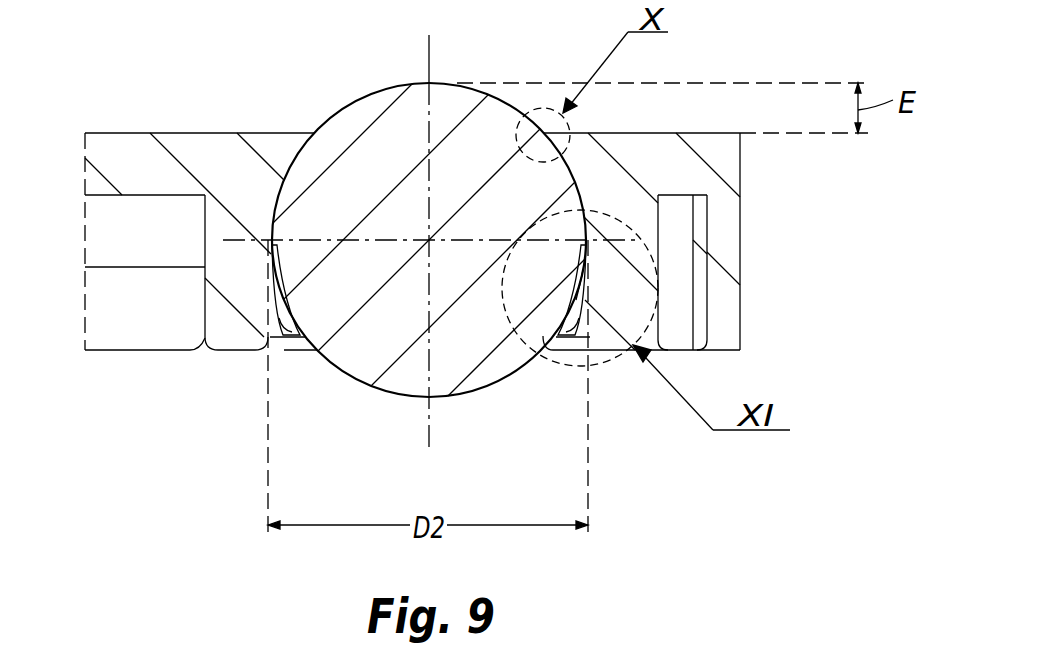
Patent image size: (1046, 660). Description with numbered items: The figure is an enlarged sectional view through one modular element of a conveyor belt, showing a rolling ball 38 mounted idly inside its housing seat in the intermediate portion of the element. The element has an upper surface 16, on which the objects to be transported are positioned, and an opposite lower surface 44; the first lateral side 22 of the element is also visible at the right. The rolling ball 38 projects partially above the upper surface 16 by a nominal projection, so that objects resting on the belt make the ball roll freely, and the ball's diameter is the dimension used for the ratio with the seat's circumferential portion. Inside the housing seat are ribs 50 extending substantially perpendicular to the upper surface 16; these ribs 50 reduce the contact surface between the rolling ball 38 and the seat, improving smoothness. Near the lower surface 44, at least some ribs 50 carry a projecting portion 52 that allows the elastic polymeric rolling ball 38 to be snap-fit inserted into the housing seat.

The upper surface 16 is at (183, 133).
The first lateral side 22 is at (740, 223).
The rolling ball 38 is at (371, 150).
The lower surface 44 is at (235, 351).
The ribs 50 is at (280, 345).
The projecting portion 52 is at (582, 295).